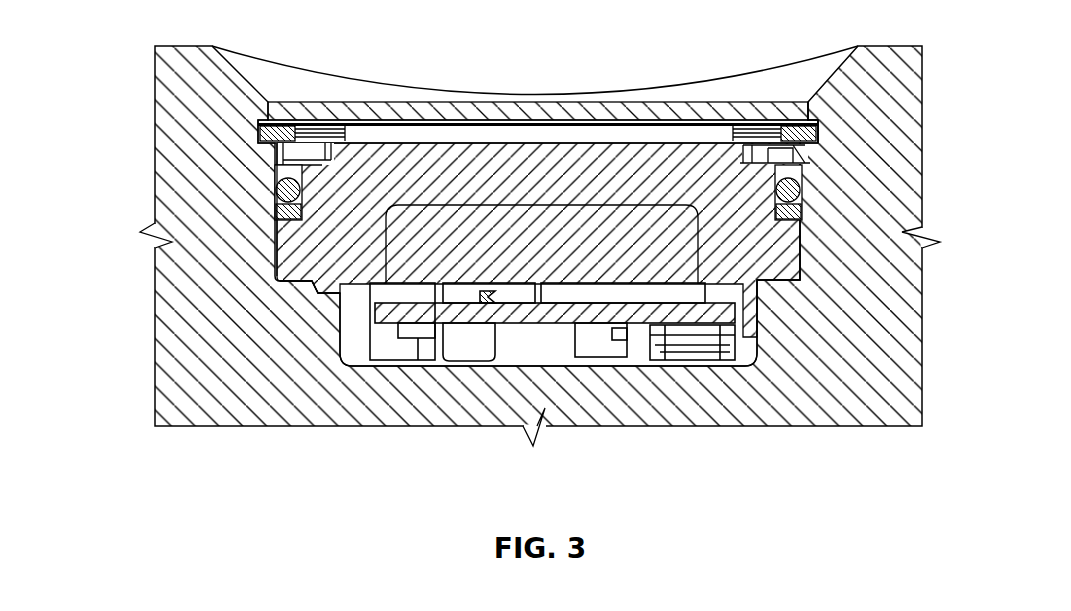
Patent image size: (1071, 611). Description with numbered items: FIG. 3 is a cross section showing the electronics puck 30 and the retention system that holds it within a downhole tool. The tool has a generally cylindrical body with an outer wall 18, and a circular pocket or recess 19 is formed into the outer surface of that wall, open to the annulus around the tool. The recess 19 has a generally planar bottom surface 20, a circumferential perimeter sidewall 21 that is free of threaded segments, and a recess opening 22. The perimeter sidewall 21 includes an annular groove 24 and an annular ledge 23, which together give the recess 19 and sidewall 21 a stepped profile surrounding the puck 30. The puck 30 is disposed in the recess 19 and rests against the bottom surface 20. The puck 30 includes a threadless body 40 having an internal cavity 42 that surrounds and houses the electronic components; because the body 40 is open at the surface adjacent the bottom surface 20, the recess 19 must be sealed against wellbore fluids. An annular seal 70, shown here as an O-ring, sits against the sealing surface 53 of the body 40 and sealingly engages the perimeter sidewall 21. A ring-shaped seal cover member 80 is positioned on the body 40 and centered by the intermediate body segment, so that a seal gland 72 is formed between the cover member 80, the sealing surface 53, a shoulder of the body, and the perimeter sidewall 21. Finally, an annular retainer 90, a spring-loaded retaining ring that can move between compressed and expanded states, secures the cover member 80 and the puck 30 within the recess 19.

The outer wall 18 is at (835, 388).
The recess 19 is at (632, 366).
The bottom surface 20 is at (527, 368).
The perimeter sidewall 21 is at (800, 213).
The recess opening 22 is at (243, 77).
The annular ledge 23 is at (768, 288).
The annular groove 24 is at (260, 137).
The puck 30 is at (328, 263).
The body 40 is at (663, 177).
The internal cavity 42 is at (475, 208).
The sealing surface 53 is at (276, 260).
The annular seal 70 is at (265, 163).
The seal gland 72 is at (274, 170).
The seal cover member 80 is at (800, 158).
The annular retainer 90 is at (815, 137).